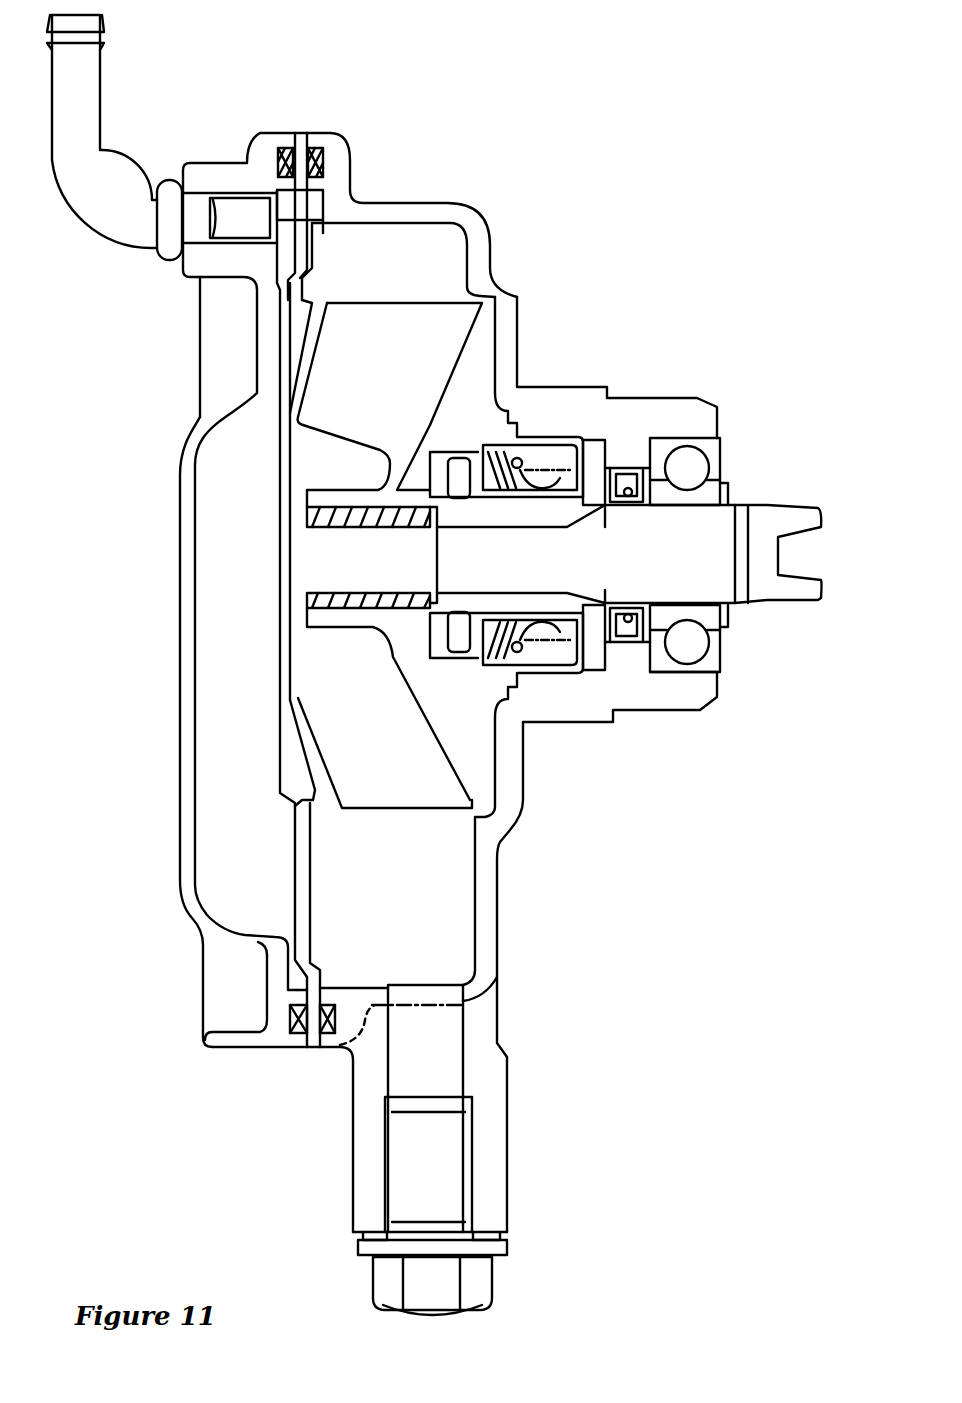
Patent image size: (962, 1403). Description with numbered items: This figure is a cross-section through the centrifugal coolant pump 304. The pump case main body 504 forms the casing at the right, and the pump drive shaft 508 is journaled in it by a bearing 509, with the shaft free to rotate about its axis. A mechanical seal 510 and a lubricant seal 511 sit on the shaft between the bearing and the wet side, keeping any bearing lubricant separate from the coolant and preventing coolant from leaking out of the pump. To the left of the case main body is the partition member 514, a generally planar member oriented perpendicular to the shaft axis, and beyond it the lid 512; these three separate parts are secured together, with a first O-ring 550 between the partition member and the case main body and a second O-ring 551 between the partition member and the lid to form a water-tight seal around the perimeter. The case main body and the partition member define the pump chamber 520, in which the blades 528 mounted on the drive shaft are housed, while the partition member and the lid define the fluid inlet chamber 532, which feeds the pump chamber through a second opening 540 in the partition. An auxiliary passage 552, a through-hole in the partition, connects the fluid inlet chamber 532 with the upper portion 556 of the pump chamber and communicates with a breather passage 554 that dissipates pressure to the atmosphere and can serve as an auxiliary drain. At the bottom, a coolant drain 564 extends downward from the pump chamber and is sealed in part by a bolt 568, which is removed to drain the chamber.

The pump 304 is at (552, 168).
The pump case main body 504 is at (517, 322).
The pump drive shaft 508 is at (763, 583).
The bearing 509 is at (690, 470).
The mechanical seal 510 is at (468, 473).
The lubricant seal 511 is at (627, 467).
The lid 512 is at (185, 508).
The partition member 514 is at (293, 910).
The pump chamber 520 is at (463, 887).
The blades 528 is at (337, 380).
The fluid inlet chamber 532 is at (208, 597).
The second opening 540 is at (290, 683).
The first O-ring 550 is at (323, 157).
The second O-ring 551 is at (277, 163).
The auxiliary passage 552 is at (310, 207).
The breather passage 554 is at (80, 195).
The upper portion of the pump chamber 556 is at (432, 277).
The coolant drain 564 is at (453, 1048).
The bolt 568 is at (473, 1277).